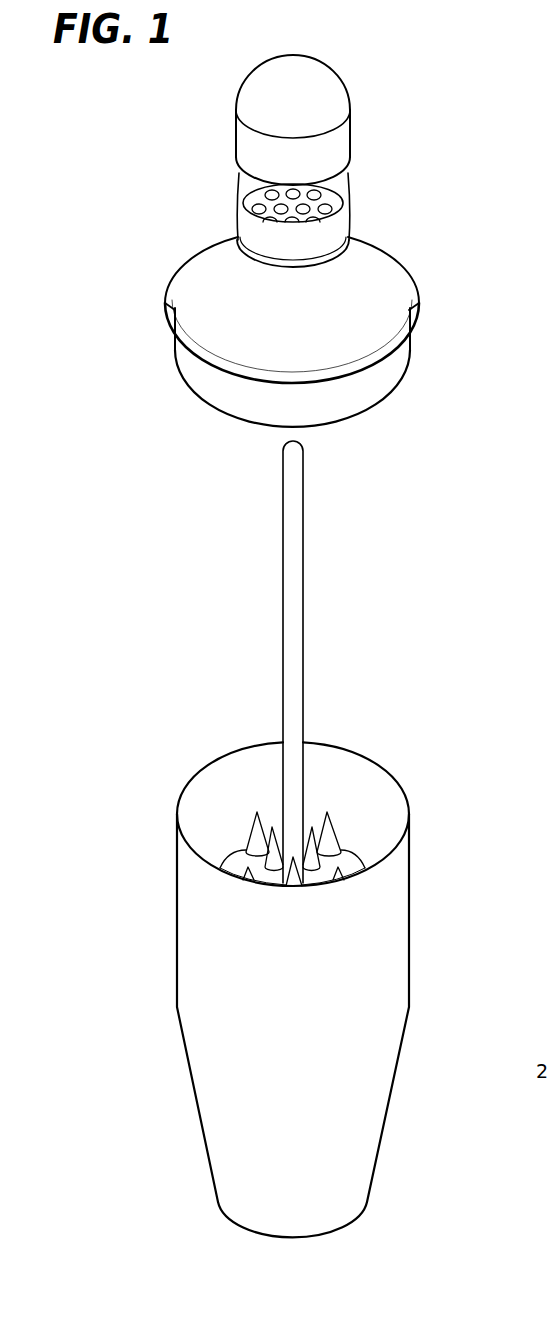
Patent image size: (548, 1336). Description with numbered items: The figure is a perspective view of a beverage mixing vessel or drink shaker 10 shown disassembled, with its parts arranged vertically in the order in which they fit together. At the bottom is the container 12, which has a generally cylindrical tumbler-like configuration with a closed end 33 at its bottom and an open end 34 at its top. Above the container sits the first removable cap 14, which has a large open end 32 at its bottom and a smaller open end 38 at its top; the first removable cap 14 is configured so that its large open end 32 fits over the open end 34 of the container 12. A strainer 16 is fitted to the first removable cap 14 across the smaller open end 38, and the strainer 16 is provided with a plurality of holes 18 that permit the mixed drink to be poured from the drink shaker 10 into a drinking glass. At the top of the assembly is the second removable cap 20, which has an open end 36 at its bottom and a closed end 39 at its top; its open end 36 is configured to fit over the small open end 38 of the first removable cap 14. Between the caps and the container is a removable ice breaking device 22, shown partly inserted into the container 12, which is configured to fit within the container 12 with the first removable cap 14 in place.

The drink shaker 10 is at (386, 73).
The container 12 is at (177, 894).
The first removable cap 14 is at (173, 292).
The strainer 16 is at (258, 200).
The holes 18 is at (310, 205).
The second removable cap 20 is at (236, 120).
The removable ice breaking device 22 is at (236, 695).
The large open end 32 is at (392, 408).
The closed end 33 is at (367, 1233).
The open end 34 is at (401, 762).
The open end 36 is at (224, 160).
The smaller open end 38 is at (351, 172).
The closed end 39 is at (299, 39).